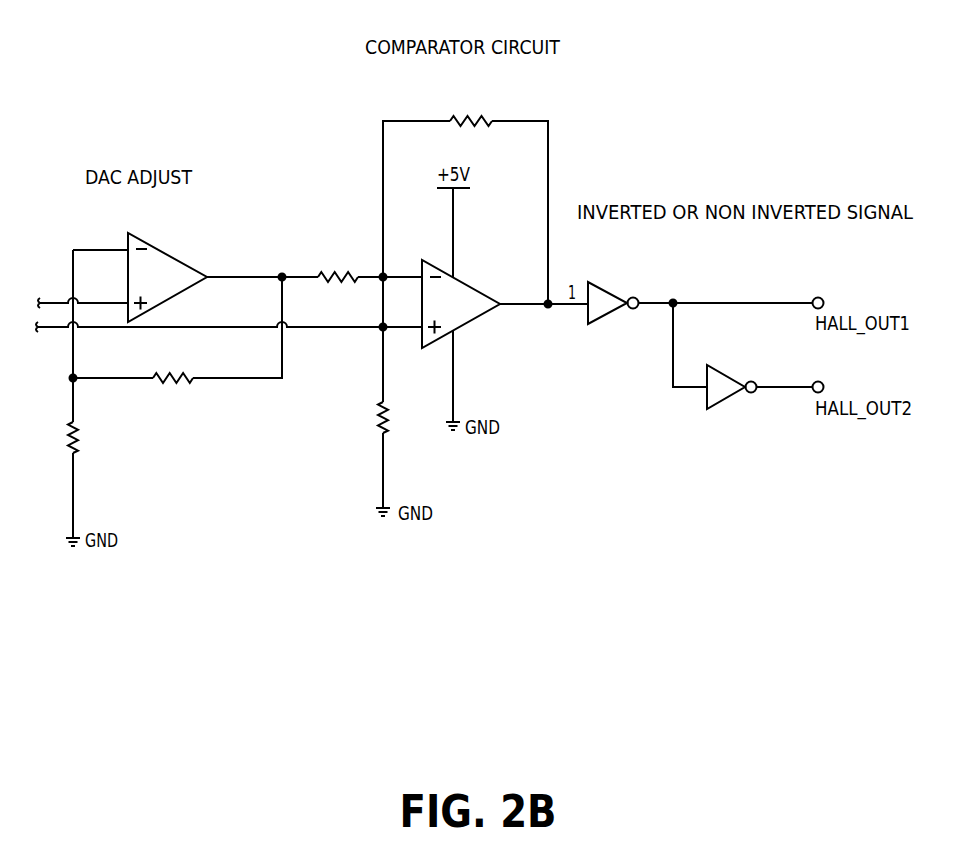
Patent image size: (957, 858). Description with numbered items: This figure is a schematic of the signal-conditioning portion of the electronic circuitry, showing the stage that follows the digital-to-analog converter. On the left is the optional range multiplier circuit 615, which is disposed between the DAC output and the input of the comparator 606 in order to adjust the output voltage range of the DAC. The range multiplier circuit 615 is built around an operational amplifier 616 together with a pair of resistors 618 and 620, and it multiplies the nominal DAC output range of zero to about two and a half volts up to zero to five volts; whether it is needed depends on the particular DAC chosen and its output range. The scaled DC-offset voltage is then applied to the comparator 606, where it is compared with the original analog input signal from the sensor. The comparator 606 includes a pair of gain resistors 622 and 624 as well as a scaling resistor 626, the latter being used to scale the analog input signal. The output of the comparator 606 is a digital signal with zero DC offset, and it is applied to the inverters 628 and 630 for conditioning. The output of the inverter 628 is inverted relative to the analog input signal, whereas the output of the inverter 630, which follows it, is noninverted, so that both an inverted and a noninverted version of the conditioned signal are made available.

The range multiplier circuit 615 is at (247, 137).
The operational amplifier 616 is at (163, 250).
The resistor 618 is at (192, 380).
The resistor 620 is at (75, 454).
The gain resistor 622 is at (488, 120).
The gain resistor 624 is at (333, 246).
The comparator 606 is at (467, 285).
The scaling resistor 626 is at (381, 435).
The inverter 628 is at (617, 297).
The inverter 630 is at (745, 380).